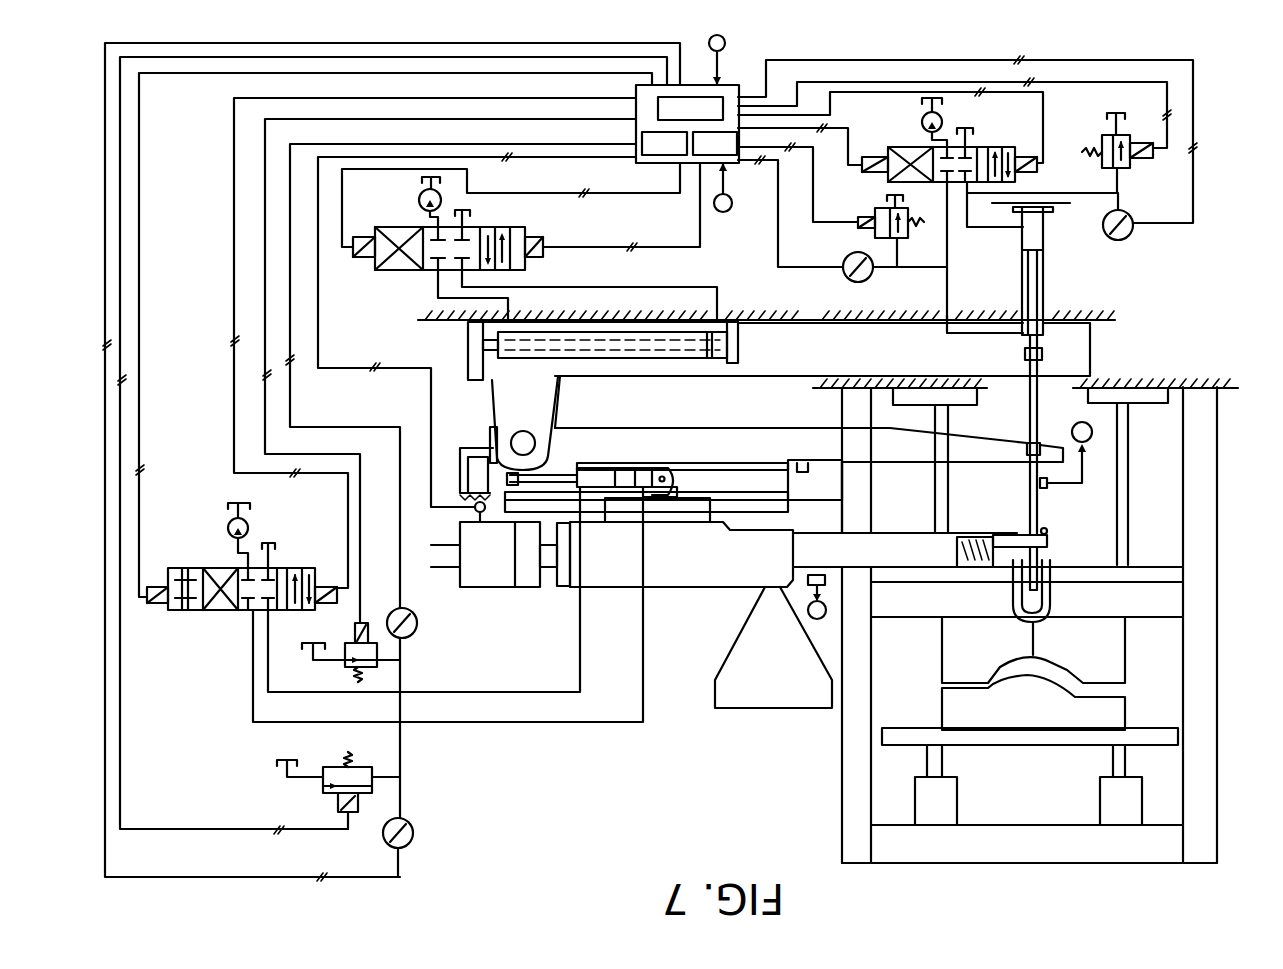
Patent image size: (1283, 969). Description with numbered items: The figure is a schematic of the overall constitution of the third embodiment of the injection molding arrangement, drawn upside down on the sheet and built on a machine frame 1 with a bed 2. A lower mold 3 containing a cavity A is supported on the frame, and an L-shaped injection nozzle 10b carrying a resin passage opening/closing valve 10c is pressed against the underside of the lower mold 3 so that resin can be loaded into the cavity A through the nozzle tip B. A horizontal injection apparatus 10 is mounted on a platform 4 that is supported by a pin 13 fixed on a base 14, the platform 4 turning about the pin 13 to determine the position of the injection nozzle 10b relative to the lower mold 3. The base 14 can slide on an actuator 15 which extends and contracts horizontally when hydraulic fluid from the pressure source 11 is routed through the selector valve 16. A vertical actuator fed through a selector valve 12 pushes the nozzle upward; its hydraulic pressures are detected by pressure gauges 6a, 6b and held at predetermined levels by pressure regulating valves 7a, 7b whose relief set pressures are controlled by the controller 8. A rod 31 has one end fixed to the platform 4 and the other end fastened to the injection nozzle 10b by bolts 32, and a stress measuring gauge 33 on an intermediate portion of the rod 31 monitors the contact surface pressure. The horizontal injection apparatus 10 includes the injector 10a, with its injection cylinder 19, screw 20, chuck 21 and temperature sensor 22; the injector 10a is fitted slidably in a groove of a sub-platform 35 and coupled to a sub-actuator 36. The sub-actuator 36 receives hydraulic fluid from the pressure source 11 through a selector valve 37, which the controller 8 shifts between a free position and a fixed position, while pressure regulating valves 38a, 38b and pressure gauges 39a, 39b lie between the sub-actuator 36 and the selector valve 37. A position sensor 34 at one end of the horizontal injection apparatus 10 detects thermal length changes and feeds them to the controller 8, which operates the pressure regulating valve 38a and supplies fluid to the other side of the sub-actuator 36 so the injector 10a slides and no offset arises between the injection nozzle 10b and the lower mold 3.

The machine frame 1 is at (1217, 720).
The bed / table base 2 is at (1177, 597).
The lower mold 3 is at (1125, 645).
The platform 4 is at (795, 428).
The pressure gauge 6a is at (1114, 240).
The pressure gauge 6b is at (845, 275).
The pressure regulating valve 7a is at (1102, 140).
The pressure regulating valve 7b is at (875, 232).
The controller 8 is at (638, 164).
The horizontal injection apparatus 10 is at (707, 588).
The injector 10a is at (890, 535).
The injection nozzle 10b is at (1050, 595).
The resin passage opening/closing valve 10c is at (1047, 627).
The pressure source 11 is at (419, 200).
The selector valve 12 is at (885, 182).
The pin 13 is at (511, 440).
The base 14 is at (768, 376).
The actuator 15 is at (494, 379).
The selector valve 16 is at (425, 270).
The injection cylinder 19 is at (970, 568).
The screw 20 is at (975, 540).
The clamp chuck 21 is at (998, 537).
The temperature sensor 22 is at (838, 572).
The rod 31 is at (1047, 510).
The bolts 32 is at (1047, 532).
The stress measuring gauge 33 is at (1050, 485).
The position sensor 34 is at (474, 510).
The sub-platform 35 is at (797, 488).
The sub-actuator 36 is at (639, 467).
The selector valve 37 is at (185, 612).
The pressure regulating valve 38a is at (345, 668).
The pressure regulating valve 38b is at (323, 792).
The pressure gauge 39a is at (416, 630).
The pressure gauge 39b is at (413, 831).
The cavity A is at (990, 684).
The tool tip B is at (1025, 628).